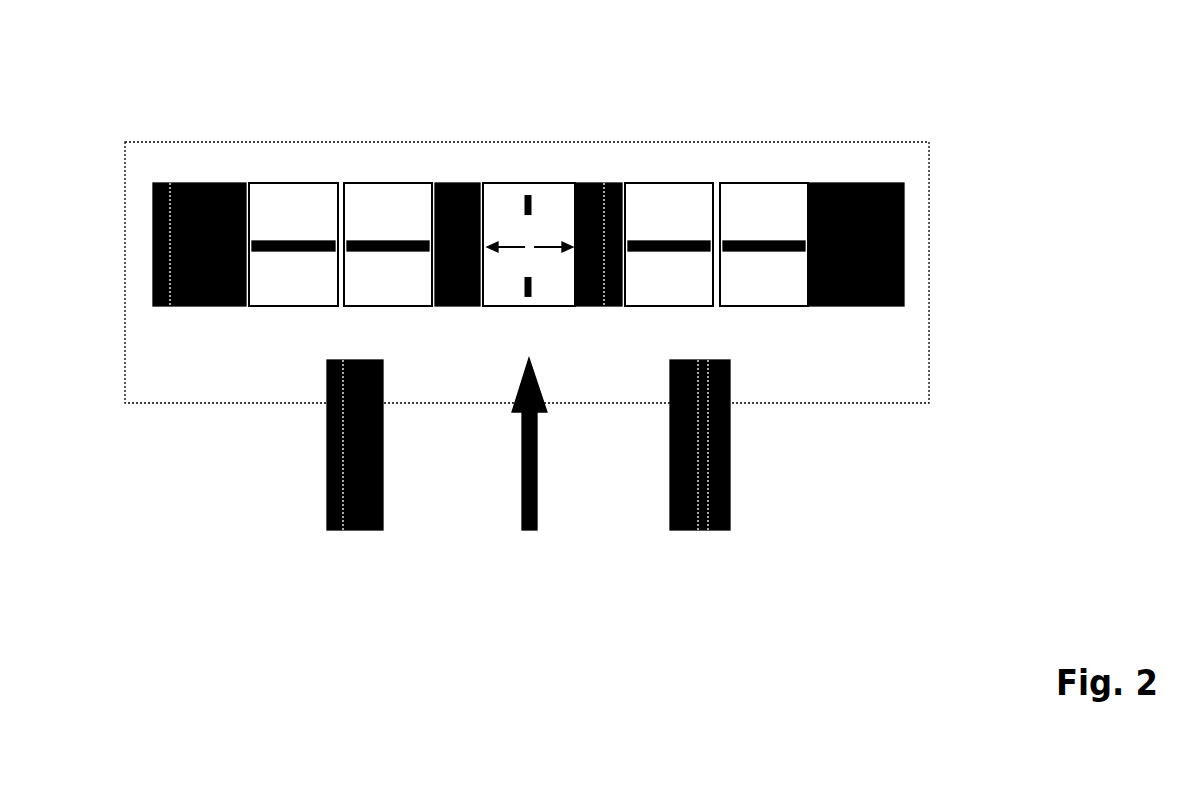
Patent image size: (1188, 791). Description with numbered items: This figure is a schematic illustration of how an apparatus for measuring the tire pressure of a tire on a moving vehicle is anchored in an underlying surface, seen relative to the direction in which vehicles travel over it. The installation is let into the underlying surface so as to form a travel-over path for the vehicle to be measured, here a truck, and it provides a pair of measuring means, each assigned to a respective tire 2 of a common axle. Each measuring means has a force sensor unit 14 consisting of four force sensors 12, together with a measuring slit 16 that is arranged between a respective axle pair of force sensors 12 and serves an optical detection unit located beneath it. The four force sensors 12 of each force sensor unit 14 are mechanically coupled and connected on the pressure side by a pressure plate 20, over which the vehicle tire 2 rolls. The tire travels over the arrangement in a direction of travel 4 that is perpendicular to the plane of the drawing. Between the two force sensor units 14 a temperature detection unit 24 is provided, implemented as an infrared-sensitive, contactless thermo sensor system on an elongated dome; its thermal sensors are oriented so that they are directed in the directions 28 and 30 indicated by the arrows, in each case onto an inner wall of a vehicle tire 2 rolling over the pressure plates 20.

The tire 2 is at (327, 475).
The direction of travel 4 is at (522, 470).
The force sensor 12 is at (318, 228).
The force sensor unit 14 is at (792, 168).
The measuring slit 16 is at (265, 241).
The pressure plate 20 is at (305, 307).
The temperature detection unit 24 is at (544, 216).
The direction 28 is at (500, 248).
The direction 30 is at (545, 248).